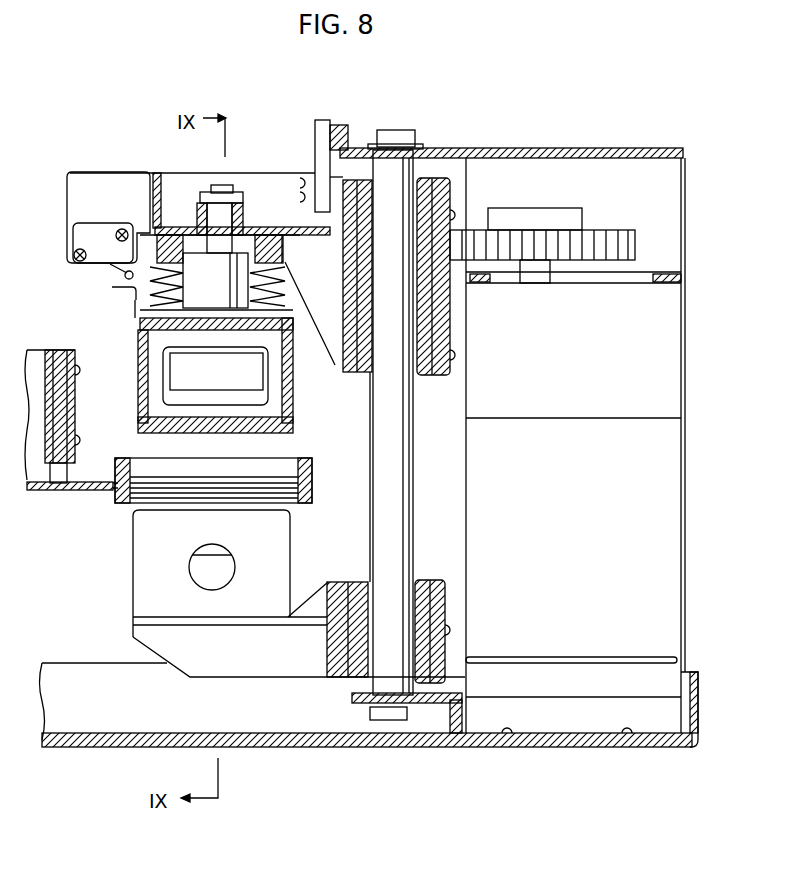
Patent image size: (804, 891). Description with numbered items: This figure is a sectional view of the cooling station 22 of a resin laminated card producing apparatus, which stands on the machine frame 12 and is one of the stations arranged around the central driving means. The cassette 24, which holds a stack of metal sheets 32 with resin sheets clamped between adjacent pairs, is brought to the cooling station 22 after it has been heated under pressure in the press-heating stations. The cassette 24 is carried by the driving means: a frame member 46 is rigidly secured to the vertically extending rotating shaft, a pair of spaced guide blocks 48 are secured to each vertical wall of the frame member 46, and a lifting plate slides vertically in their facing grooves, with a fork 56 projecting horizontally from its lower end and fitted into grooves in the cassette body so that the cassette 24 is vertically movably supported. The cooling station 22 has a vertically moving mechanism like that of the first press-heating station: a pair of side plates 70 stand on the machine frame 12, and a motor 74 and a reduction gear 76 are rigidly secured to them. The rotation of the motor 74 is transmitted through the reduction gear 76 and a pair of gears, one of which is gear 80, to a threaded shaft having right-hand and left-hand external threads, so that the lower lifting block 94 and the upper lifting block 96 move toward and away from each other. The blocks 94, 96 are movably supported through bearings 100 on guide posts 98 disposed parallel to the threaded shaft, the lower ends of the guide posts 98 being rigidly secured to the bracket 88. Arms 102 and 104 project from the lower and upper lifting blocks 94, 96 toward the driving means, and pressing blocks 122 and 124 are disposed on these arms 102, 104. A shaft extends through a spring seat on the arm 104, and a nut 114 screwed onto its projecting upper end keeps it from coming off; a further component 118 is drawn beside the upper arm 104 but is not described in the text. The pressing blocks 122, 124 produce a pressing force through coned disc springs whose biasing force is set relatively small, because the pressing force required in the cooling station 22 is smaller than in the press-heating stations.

The machine frame 12 is at (287, 748).
The cooling station 22 is at (530, 136).
The cassette 24 is at (304, 452).
The metal sheets 32 is at (288, 500).
The frame member 46 is at (30, 490).
The guide blocks 48 is at (74, 406).
The fork 56 is at (100, 492).
The side plates 70 is at (537, 737).
The motor 74 is at (662, 553).
The reduction gear 76 is at (665, 392).
The gear 80 is at (615, 245).
The bracket 88 is at (430, 700).
The lower lifting block 94 is at (362, 590).
The upper lifting block 96 is at (366, 375).
The guide posts 98 is at (400, 478).
The bearings 100 is at (352, 366).
The arm 102 is at (240, 665).
The arm 104 is at (266, 186).
The nut 114 is at (204, 198).
The switch box 118 is at (108, 242).
The pressing block 122 is at (142, 576).
The pressing block 124 is at (139, 392).